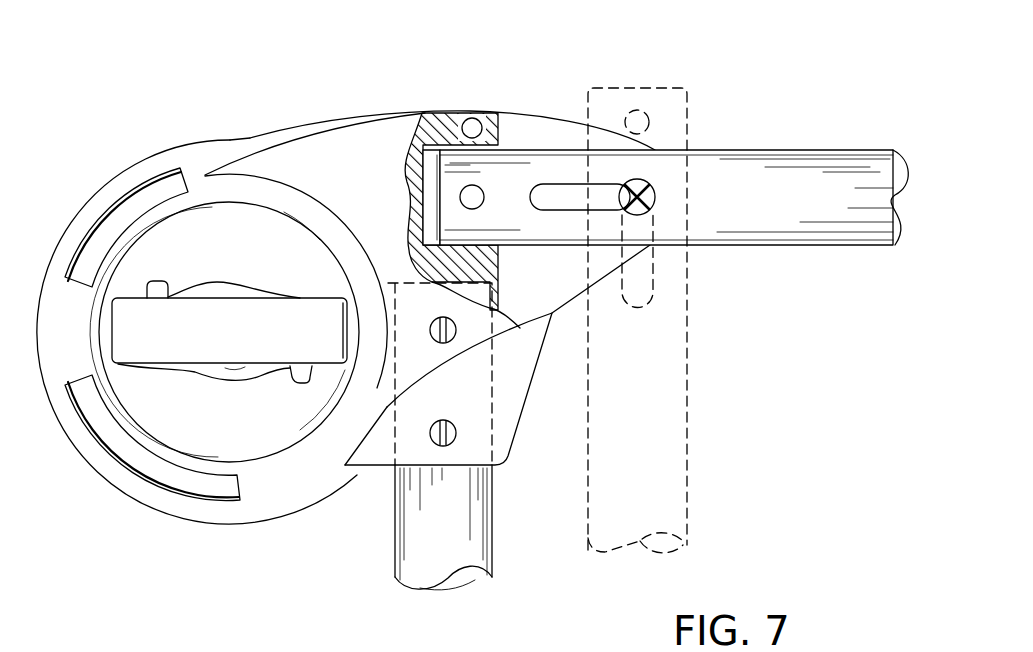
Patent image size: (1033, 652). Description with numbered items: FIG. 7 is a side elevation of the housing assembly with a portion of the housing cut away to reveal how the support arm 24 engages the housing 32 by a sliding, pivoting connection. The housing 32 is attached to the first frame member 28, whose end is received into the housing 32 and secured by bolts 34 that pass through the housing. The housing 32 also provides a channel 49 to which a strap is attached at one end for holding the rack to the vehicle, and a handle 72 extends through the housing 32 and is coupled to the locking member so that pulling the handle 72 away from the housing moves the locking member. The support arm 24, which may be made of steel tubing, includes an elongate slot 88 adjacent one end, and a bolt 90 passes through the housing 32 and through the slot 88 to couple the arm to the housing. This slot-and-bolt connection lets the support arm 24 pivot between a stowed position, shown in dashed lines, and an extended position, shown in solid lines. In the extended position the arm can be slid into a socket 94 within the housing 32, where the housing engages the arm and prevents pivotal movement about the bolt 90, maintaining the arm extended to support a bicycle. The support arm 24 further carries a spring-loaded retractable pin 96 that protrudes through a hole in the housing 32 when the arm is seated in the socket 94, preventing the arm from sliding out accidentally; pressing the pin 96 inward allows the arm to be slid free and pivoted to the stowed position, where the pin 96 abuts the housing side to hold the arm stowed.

The support arm 24 is at (782, 172).
The first frame member 28 is at (420, 570).
The housing 32 is at (212, 150).
The bolts 34 is at (454, 338).
The channel 49 is at (143, 203).
The handle 72 is at (222, 357).
The elongate slot 88 is at (562, 195).
The bolt 90 is at (651, 186).
The socket 94 is at (430, 168).
The pin 96 is at (480, 206).